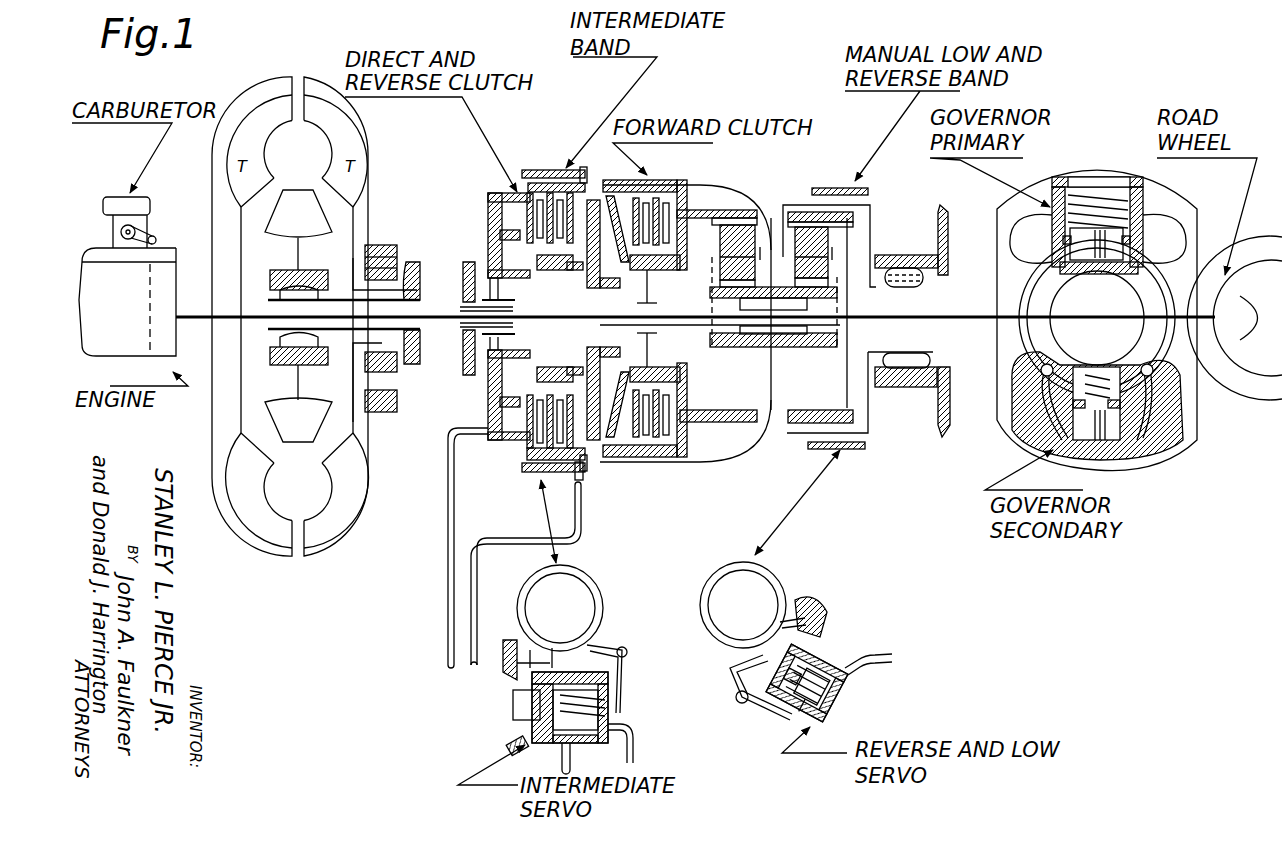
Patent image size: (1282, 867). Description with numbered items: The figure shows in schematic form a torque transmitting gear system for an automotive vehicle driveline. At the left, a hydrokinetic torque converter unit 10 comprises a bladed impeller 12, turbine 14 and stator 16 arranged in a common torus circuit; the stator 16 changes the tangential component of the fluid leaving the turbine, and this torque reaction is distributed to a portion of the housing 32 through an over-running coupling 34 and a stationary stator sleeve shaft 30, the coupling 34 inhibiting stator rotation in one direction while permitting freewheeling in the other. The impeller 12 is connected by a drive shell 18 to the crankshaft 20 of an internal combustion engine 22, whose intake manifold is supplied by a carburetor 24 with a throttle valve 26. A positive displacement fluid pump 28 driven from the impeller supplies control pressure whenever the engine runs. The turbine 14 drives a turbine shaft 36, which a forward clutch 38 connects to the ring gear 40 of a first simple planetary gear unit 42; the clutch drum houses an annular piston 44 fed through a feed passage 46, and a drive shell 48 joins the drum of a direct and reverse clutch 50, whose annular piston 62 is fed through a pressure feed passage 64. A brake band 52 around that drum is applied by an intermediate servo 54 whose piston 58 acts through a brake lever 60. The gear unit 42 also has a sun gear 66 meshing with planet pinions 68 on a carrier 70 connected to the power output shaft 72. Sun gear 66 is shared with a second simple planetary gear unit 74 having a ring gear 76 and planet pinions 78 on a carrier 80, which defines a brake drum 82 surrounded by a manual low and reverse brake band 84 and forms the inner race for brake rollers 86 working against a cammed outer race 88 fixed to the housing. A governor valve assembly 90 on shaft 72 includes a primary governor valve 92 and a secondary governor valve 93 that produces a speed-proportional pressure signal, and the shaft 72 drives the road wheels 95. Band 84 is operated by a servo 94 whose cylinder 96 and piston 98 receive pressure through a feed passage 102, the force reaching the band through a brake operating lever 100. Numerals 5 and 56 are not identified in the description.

The stator 5 is at (298, 230).
The hydrokinetic torque converter unit 10 is at (323, 93).
The impeller 12 is at (356, 205).
The turbine 14 is at (256, 140).
The stator 16 is at (302, 188).
The drive shell 18 is at (212, 236).
The crankshaft 20 is at (188, 312).
The internal combustion vehicle engine 22 is at (108, 247).
The carburetor 24 is at (128, 195).
The engine carburetor throttle valve 26 is at (152, 236).
The positive displacement fluid pump 28 is at (397, 400).
The stationary stator sleeve shaft 30 is at (328, 292).
The housing 32 is at (416, 344).
The over-running coupling 34 is at (298, 366).
The turbine shaft 36 is at (430, 313).
The forward clutch 38 is at (634, 470).
The ring gear 40 is at (683, 210).
The first simple planetary gear unit 42 is at (768, 232).
The annular piston 44 is at (592, 362).
The feed passage 46 is at (582, 518).
The drive shell 48 is at (714, 466).
The direct and reverse clutch 50 is at (526, 450).
The brake band 52 is at (548, 170).
The intermediate servo 54 is at (615, 721).
The servo rod 56 is at (532, 727).
The piston 58 is at (571, 673).
The motion transmitting brake lever 60 is at (628, 675).
The annular piston 62 is at (518, 404).
The pressure feed passage 64 is at (446, 605).
The sun gear 66 is at (718, 348).
The planet pinions 68 is at (736, 222).
The carrier 70 is at (712, 292).
The power output shaft 72 is at (935, 322).
The second simple planetary gear unit 74 is at (835, 233).
The ring gear 76 is at (838, 188).
The planet pinions 78 is at (825, 263).
The carrier 80 is at (795, 215).
The brake drum 82 is at (797, 433).
The manual low and reverse brake band 84 is at (848, 450).
The brake rollers 86 is at (915, 287).
The outer race 88 is at (912, 258).
The fluid pressure governor valve assembly 90 is at (1177, 453).
The primary governor valve 92 is at (1085, 276).
The secondary governor valve 93 is at (1097, 440).
The fluid pressure operated servo 94 is at (828, 650).
The vehicle road wheels 95 is at (1215, 365).
The cylinder 96 is at (838, 703).
The fluid pressure operated piston 98 is at (838, 665).
The brake operating lever 100 is at (752, 702).
The feed passage 102 is at (893, 657).